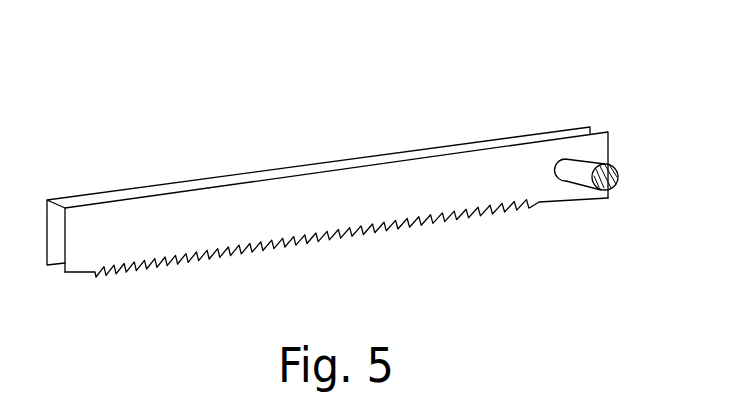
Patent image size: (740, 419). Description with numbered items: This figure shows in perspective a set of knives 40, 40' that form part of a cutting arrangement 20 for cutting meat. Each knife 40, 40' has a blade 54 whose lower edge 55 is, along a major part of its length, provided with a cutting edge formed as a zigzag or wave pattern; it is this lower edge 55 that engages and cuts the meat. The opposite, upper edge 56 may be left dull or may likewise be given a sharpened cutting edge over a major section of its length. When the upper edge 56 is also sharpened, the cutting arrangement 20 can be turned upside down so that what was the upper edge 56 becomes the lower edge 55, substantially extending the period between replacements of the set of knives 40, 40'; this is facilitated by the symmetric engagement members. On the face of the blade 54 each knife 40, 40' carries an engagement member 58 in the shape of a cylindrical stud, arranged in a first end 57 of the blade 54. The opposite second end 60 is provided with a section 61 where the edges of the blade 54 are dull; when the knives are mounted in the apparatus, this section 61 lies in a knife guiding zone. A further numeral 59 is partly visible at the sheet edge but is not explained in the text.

The cutting arrangement 20 is at (152, 117).
The knife 40 is at (318, 158).
The knife 40' is at (336, 162).
The blade 54 is at (313, 207).
The lower edge 55 is at (392, 255).
The upper edge 56 is at (237, 172).
The first end 57 is at (608, 103).
The engagement member 58 is at (592, 154).
The lower edge 59 is at (580, 415).
The second end 60 is at (67, 170).
The section 61 is at (87, 306).